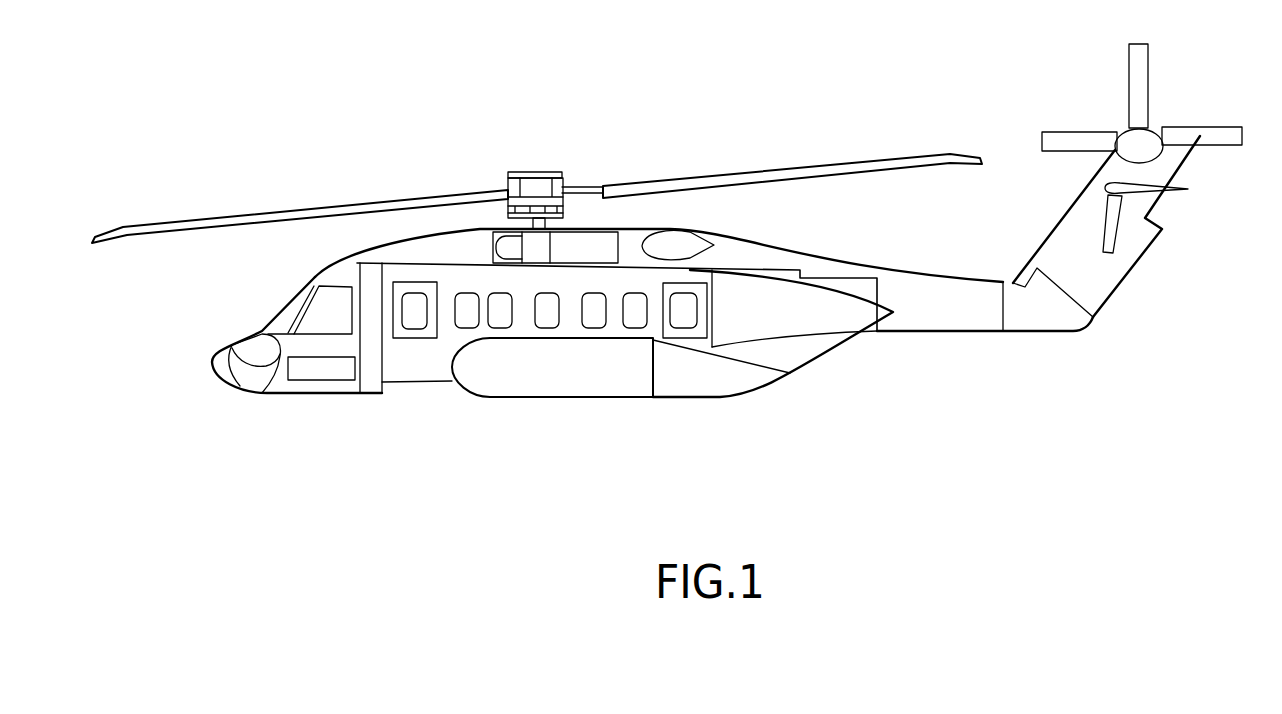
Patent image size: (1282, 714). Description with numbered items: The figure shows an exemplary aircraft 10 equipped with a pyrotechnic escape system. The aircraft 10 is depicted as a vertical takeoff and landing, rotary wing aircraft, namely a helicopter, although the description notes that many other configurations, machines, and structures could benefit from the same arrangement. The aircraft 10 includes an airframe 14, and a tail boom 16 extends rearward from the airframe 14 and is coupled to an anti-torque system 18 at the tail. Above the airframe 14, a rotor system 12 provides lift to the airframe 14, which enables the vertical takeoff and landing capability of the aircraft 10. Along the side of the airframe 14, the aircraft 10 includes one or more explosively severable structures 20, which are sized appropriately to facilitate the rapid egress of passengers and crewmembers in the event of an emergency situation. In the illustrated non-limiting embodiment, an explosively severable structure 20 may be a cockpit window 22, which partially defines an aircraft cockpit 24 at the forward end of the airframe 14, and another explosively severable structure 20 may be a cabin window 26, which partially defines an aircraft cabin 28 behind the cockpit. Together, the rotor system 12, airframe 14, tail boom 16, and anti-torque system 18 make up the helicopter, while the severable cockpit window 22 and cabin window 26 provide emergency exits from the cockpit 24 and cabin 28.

The aircraft 10 is at (698, 102).
The rotor system 12 is at (325, 209).
The airframe 14 is at (435, 383).
The tail boom 16 is at (963, 307).
The anti-torque system 18 is at (1167, 98).
The explosively severable structure 20 is at (324, 337).
The cockpit window 22 is at (306, 318).
The aircraft cockpit 24 is at (305, 370).
The cabin window 26 is at (414, 318).
The aircraft cabin 28 is at (523, 322).